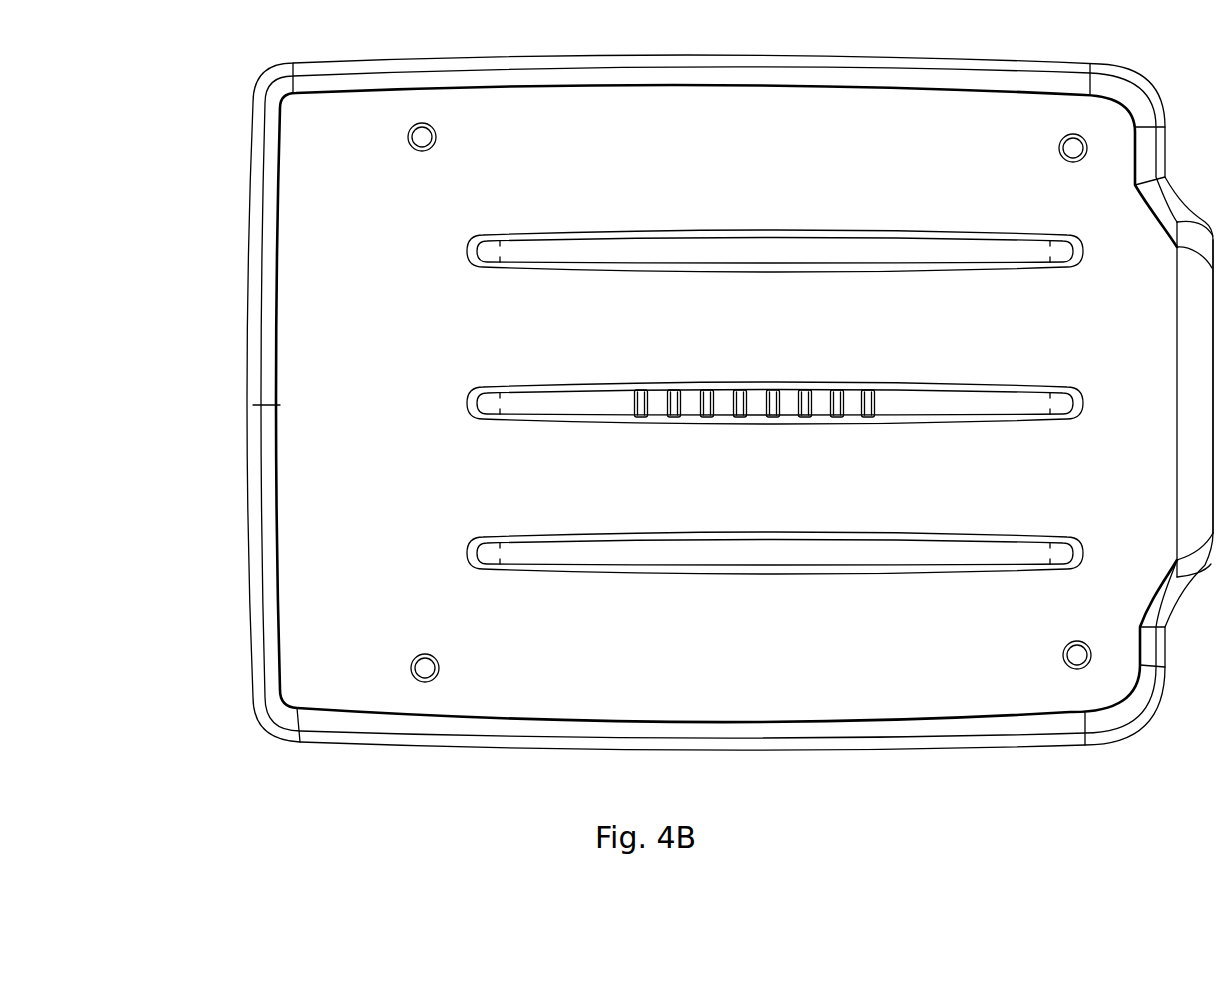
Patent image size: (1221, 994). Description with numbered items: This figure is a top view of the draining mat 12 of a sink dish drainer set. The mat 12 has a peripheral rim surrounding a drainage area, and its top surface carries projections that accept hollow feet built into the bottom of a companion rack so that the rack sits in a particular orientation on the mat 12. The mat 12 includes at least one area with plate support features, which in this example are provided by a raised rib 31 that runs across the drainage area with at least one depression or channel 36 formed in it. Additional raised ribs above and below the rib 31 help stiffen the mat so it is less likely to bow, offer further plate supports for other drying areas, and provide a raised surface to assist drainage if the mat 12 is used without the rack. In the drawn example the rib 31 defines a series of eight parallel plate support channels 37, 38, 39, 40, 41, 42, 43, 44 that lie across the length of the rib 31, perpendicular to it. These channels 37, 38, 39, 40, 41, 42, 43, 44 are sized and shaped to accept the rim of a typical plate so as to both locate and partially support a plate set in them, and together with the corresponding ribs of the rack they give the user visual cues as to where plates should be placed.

The draining mat 12 is at (222, 341).
The raised rib 31 is at (958, 386).
The channel 36 is at (725, 388).
The plate support channel 37 is at (873, 418).
The plate support channel 38 is at (836, 418).
The plate support channel 39 is at (806, 389).
The plate support channel 40 is at (771, 418).
The plate support channel 41 is at (741, 389).
The plate support channel 42 is at (708, 418).
The plate support channel 43 is at (675, 389).
The plate support channel 44 is at (644, 418).